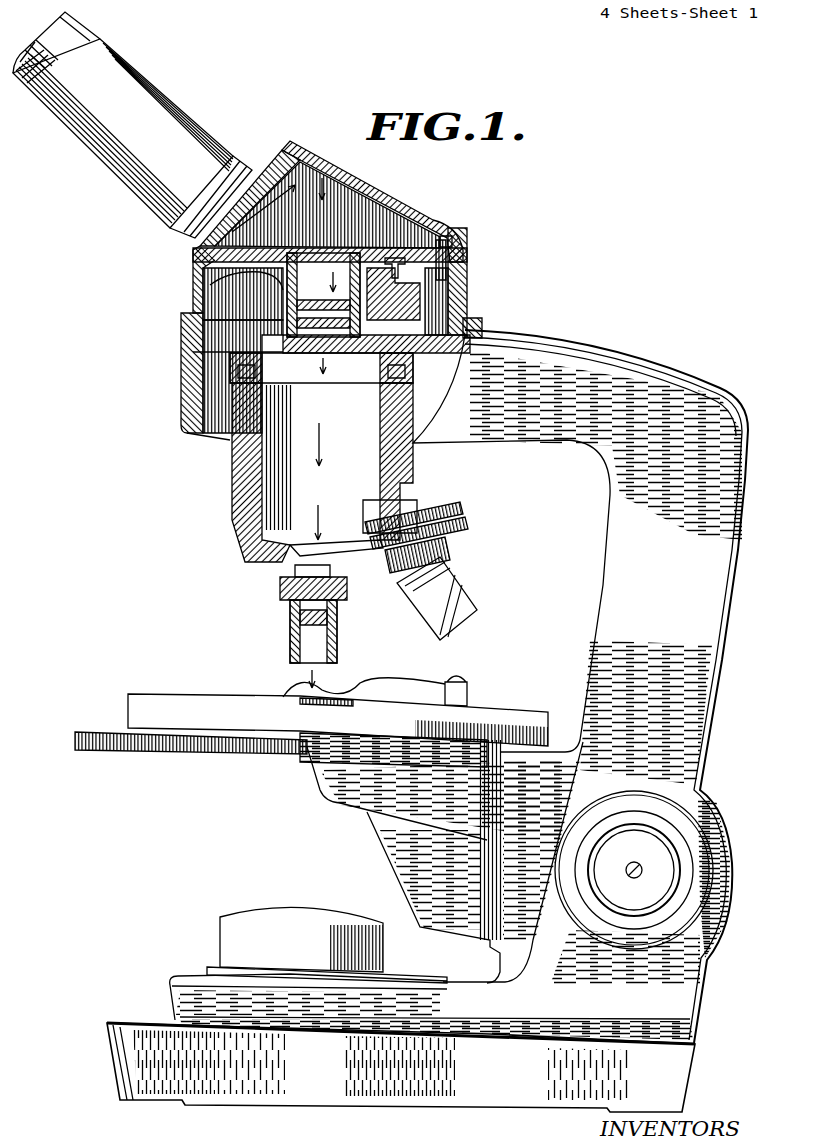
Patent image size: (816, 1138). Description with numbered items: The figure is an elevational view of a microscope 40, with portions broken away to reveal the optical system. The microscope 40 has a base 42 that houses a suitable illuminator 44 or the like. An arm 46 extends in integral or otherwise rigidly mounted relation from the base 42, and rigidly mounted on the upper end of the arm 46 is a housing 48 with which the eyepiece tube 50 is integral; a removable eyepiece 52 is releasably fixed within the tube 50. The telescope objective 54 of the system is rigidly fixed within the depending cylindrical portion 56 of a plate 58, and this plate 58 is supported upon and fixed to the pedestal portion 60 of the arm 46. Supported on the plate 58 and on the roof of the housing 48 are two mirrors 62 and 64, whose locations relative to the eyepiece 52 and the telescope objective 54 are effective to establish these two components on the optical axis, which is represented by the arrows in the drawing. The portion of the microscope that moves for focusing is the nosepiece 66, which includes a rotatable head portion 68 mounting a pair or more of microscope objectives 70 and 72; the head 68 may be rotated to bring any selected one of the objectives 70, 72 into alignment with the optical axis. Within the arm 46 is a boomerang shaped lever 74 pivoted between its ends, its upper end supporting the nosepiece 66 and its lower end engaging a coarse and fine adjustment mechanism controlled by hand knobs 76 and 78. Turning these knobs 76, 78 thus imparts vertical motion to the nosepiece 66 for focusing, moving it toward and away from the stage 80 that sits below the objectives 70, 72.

The microscope 40 is at (556, 326).
The base 42 is at (484, 1097).
The illuminator 44 is at (243, 923).
The arm 46 is at (607, 580).
The housing 48 is at (425, 203).
The eyepiece tube 50 is at (180, 113).
The eyepiece 52 is at (64, 13).
The telescope objective 54 is at (334, 292).
The depending cylindrical portion 56 is at (200, 307).
The plate 58 is at (436, 235).
The pedestal portion 60 is at (458, 277).
The mirror 62 is at (258, 180).
The mirror 64 is at (298, 152).
The nosepiece 66 is at (240, 486).
The rotatable head portion 68 is at (456, 532).
The microscope objective 70 is at (339, 636).
The microscope objective 72 is at (432, 615).
The boomerang shaped lever 74 is at (471, 332).
The hand knob 76 is at (660, 803).
The hand knob 78 is at (660, 850).
The stage 80 is at (170, 692).